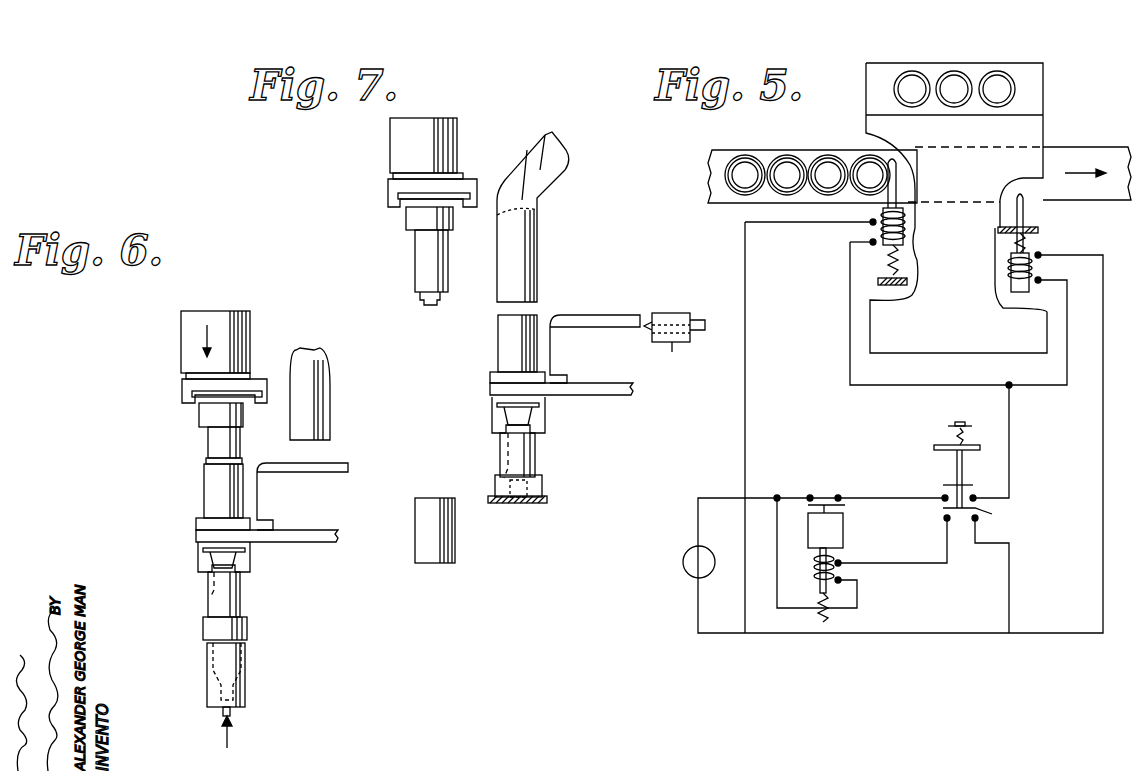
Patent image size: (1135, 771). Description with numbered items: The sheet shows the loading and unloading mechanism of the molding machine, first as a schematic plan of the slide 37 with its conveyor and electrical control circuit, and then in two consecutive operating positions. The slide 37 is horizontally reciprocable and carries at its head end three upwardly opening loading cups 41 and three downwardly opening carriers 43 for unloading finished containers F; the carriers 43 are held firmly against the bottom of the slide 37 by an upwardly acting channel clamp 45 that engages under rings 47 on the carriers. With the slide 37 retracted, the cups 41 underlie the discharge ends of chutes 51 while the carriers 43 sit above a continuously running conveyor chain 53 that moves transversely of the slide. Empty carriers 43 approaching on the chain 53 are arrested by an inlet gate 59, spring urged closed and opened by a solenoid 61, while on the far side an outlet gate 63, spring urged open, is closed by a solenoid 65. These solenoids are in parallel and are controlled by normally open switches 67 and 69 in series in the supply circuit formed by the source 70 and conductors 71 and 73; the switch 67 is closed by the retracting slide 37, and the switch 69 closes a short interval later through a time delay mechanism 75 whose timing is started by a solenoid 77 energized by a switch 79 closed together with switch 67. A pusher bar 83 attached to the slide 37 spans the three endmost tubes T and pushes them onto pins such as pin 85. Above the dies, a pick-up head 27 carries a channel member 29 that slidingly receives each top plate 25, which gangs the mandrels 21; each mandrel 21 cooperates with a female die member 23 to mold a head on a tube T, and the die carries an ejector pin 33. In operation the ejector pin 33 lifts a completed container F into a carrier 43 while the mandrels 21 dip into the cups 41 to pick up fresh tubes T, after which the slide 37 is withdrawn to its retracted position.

In FIG. 6, the mandrel 21 is at (214, 437).
In FIG. 7, the mandrel 21 is at (423, 253).
In FIG. 6, the female die member 23 is at (214, 684).
In FIG. 7, the female die member 23 is at (446, 540).
In FIG. 6, the top plate 25 is at (240, 396).
In FIG. 7, the top plate 25 is at (452, 200).
In FIG. 6, the pick-up head 27 is at (232, 332).
In FIG. 7, the pick-up head 27 is at (440, 152).
In FIG. 6, the channel member 29 is at (184, 386).
In FIG. 7, the channel member 29 is at (390, 190).
In FIG. 6, the ejector pin 33 is at (222, 692).
In FIG. 6, the slide 37 is at (316, 528).
In FIG. 7, the slide 37 is at (603, 392).
In FIG. 5, the slide 37 is at (1020, 130).
In FIG. 6, the loading cup 41 is at (214, 500).
In FIG. 7, the loading cup 41 is at (508, 343).
In FIG. 5, the loading cup 41 is at (985, 75).
In FIG. 6, the carrier 43 is at (237, 607).
In FIG. 7, the carrier 43 is at (514, 450).
In FIG. 5, the carrier 43 is at (840, 157).
In FIG. 6, the channel clamp 45 is at (250, 556).
In FIG. 7, the channel clamp 45 is at (496, 410).
In FIG. 6, the ring 47 is at (214, 567).
In FIG. 7, the ring 47 is at (518, 416).
In FIG. 6, the chute 51 is at (318, 396).
In FIG. 7, the chute 51 is at (528, 228).
In FIG. 7, the conveyor chain 53 is at (512, 503).
In FIG. 5, the conveyor chain 53 is at (720, 160).
In FIG. 5, the inlet gate 59 is at (898, 165).
In FIG. 5, the solenoid 61 is at (880, 228).
In FIG. 5, the outlet gate 63 is at (1026, 212).
In FIG. 5, the solenoid 65 is at (1035, 268).
In FIG. 5, the switch 67 is at (948, 485).
In FIG. 5, the switch 69 is at (820, 500).
In FIG. 5, the source of electrical energy 70 is at (683, 566).
In FIG. 5, the conductor 71 is at (730, 496).
In FIG. 5, the conductor 73 is at (856, 635).
In FIG. 5, the time delay mechanism 75 is at (840, 530).
In FIG. 5, the solenoid 77 is at (815, 578).
In FIG. 5, the switch 79 is at (985, 510).
In FIG. 6, the pusher bar 83 is at (328, 466).
In FIG. 7, the pusher bar 83 is at (628, 318).
In FIG. 7, the pin 85 is at (690, 320).
In FIG. 6, the tube T is at (240, 452).
In FIG. 7, the tube T is at (671, 357).
In FIG. 6, the container F is at (210, 592).
In FIG. 7, the container F is at (504, 478).